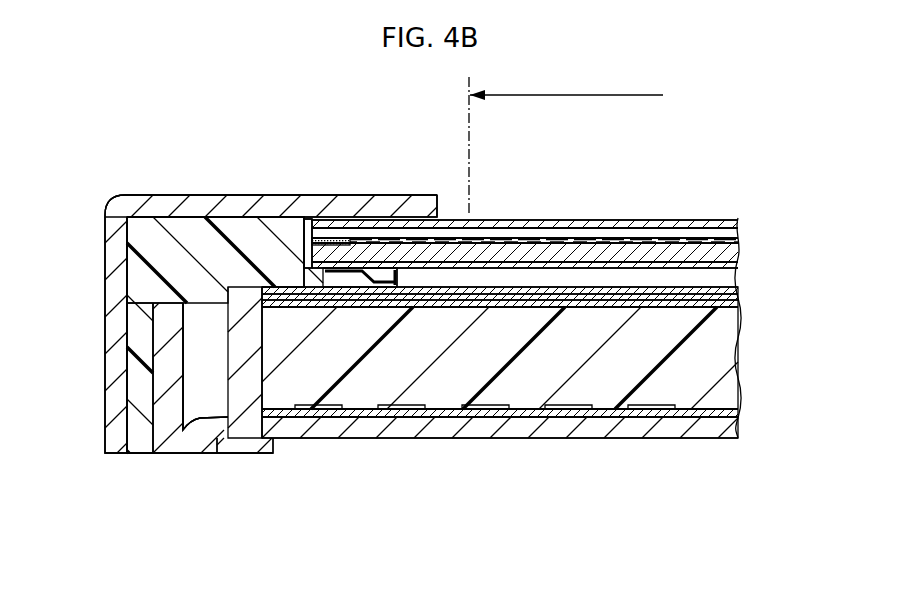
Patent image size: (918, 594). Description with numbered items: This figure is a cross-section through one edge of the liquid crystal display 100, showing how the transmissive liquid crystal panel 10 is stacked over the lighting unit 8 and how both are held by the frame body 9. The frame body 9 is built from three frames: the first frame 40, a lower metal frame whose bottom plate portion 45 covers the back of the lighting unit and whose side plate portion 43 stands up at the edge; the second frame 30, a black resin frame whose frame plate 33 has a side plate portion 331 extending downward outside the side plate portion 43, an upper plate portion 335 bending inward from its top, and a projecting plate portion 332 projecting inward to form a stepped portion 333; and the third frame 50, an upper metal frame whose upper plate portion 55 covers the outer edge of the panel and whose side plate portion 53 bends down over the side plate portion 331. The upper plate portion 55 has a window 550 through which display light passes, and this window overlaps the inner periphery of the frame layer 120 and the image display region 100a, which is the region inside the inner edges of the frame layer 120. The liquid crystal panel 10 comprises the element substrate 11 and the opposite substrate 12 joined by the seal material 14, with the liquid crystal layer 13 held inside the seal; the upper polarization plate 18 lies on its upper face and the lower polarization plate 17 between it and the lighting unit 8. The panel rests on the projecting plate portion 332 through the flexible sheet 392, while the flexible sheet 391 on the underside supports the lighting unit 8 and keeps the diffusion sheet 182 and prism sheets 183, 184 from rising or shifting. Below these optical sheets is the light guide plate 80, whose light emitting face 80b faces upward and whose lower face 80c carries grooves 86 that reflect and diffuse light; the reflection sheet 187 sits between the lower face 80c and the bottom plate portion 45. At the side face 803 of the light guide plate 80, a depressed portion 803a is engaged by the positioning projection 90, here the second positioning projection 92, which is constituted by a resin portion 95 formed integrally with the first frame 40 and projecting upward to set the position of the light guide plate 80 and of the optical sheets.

The frame body 9 is at (271, 360).
The third frame 50 is at (132, 190).
The upper plate portion 55 is at (166, 206).
The side plate portion 53 is at (108, 283).
The window 550 is at (437, 208).
The second frame 30 is at (159, 335).
The frame plate 33 is at (98, 343).
The upper plate portion 335 is at (145, 237).
The side plate portion 331 is at (135, 367).
The side plate portion 43 is at (165, 415).
The stepped portion 333 is at (318, 218).
The flexible sheet 391 is at (322, 218).
The flexible sheet 392 is at (345, 268).
The resin portion 95 is at (248, 425).
The positioning projection 90 is at (240, 362).
The second positioning projection 92 is at (189, 407).
The side face 803 is at (235, 325).
The depressed portion 803a is at (275, 500).
The liquid crystal panel 10 is at (603, 157).
The seal material 14 is at (345, 243).
The element substrate 11 is at (490, 252).
The liquid crystal layer 13 is at (528, 243).
The opposite substrate 12 is at (567, 237).
The upper polarization plate 18 is at (613, 218).
The lower polarization plate 17 is at (692, 264).
The prism sheet 184 is at (740, 289).
The prism sheet 183 is at (740, 296).
The diffusion sheet 182 is at (740, 303).
The light guide plate 80 is at (553, 385).
The light emitting face 80b is at (700, 297).
The lower face 80c is at (596, 410).
The grooves 86 is at (650, 412).
The bottom plate portion 45 is at (391, 427).
The reflection sheet 187 is at (728, 412).
The first frame 40 is at (351, 433).
The lighting unit 8 is at (808, 230).
The frame layer 120 is at (470, 215).
The projecting plate portion 332 is at (395, 277).
The liquid crystal display 100 is at (462, 84).
The image display region 100a is at (566, 86).